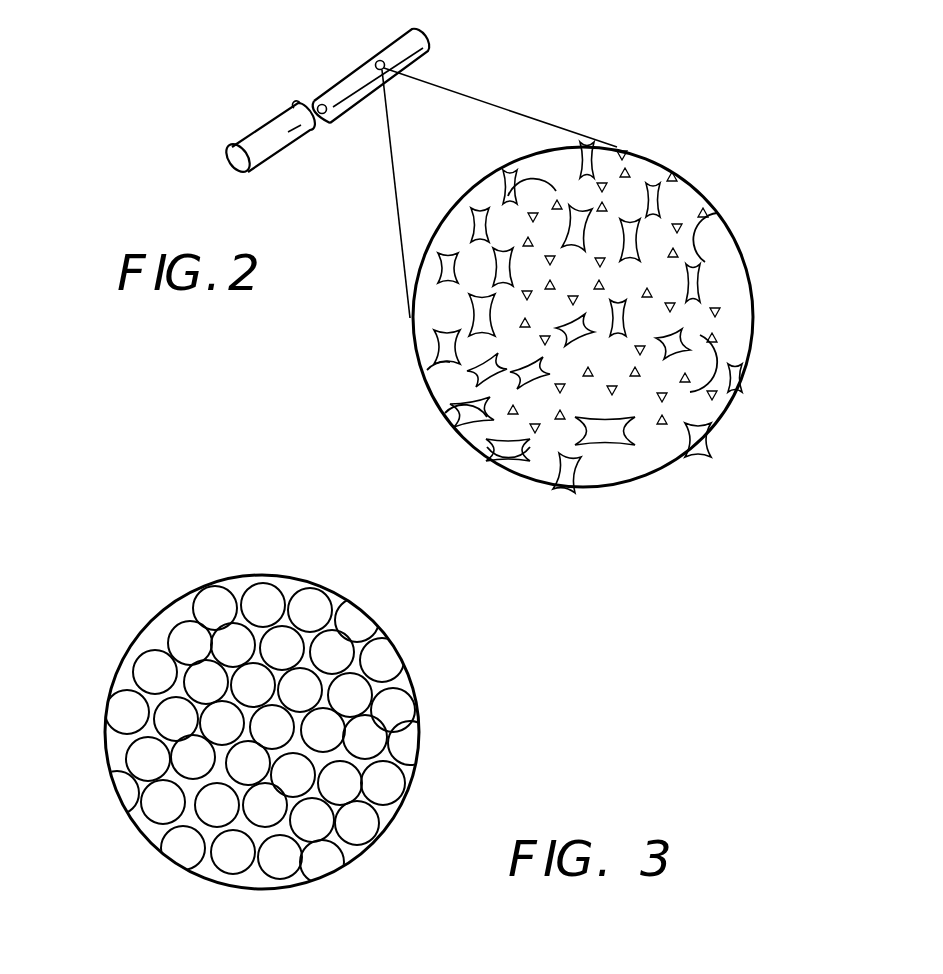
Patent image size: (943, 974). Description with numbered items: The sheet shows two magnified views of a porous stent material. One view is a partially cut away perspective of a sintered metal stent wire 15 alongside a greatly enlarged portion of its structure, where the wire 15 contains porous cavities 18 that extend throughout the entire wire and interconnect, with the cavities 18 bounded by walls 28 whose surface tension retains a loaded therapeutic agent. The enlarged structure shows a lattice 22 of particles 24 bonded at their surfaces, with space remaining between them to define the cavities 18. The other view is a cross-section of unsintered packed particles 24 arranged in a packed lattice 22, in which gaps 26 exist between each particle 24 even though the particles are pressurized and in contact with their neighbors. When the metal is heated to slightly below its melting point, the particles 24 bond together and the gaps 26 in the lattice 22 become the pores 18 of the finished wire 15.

In FIG. 2, the stent wire 15 is at (276, 123).
In FIG. 2, the porous cavities 18 is at (707, 265).
In FIG. 2, the lattice 22 is at (680, 493).
In FIG. 3, the lattice 22 is at (423, 624).
In FIG. 2, the particles 24 is at (687, 198).
In FIG. 3, the particles 24 is at (320, 600).
In FIG. 3, the gaps 26 is at (170, 618).
In FIG. 2, the walls 28 is at (674, 334).
In FIG. 3, the walls 28 is at (338, 817).